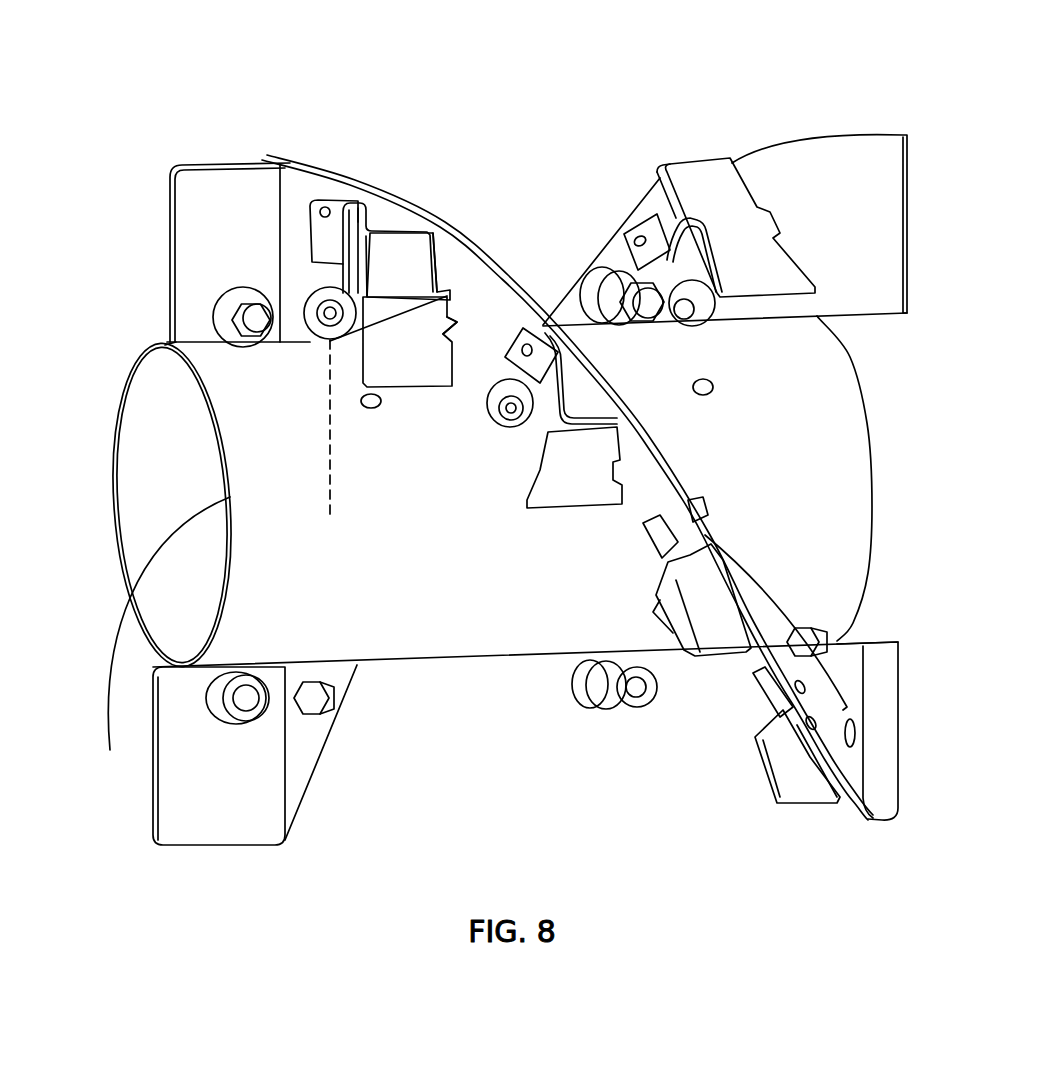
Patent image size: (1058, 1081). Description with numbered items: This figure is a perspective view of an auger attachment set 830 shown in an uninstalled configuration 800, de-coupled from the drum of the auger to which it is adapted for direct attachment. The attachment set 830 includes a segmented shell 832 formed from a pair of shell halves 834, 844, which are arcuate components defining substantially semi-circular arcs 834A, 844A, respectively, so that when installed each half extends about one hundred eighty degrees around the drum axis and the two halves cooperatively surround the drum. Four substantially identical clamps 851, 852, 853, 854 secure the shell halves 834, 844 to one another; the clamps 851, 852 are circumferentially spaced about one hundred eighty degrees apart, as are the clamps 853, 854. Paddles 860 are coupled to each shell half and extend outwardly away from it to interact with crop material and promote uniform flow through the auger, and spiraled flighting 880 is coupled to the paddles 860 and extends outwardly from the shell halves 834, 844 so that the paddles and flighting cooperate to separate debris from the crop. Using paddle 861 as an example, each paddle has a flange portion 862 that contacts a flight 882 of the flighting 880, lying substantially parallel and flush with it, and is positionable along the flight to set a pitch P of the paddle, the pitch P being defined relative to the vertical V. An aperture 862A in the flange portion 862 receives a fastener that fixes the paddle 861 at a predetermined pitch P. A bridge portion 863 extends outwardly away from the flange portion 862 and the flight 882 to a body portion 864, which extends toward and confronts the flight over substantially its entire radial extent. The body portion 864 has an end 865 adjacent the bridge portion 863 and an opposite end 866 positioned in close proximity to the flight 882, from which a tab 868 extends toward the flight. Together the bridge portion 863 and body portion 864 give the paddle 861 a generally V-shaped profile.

The uninstalled configuration 800 is at (138, 46).
The auger attachment set 830 is at (805, 60).
The segmented shell 832 is at (155, 348).
The shell half 834 is at (403, 640).
The semi-circular arc 834A is at (149, 639).
The shell half 844 is at (162, 343).
The semi-circular arc 844A is at (157, 342).
The clamp 851 is at (258, 322).
The clamp 852 is at (246, 698).
The clamp 853 is at (648, 310).
The clamp 854 is at (638, 690).
The paddles 860 is at (697, 180).
The paddle 861 is at (373, 232).
The flange portion 862 is at (340, 217).
The aperture 862A is at (323, 210).
The bridge portion 863 is at (348, 226).
The body portion 864 is at (410, 370).
The end 865 is at (368, 262).
The end 866 is at (437, 257).
The tab 868 is at (447, 332).
The spiraled flighting 880 is at (840, 163).
The flight 882 is at (503, 280).
The pitch P is at (407, 300).
The vertical V is at (330, 473).